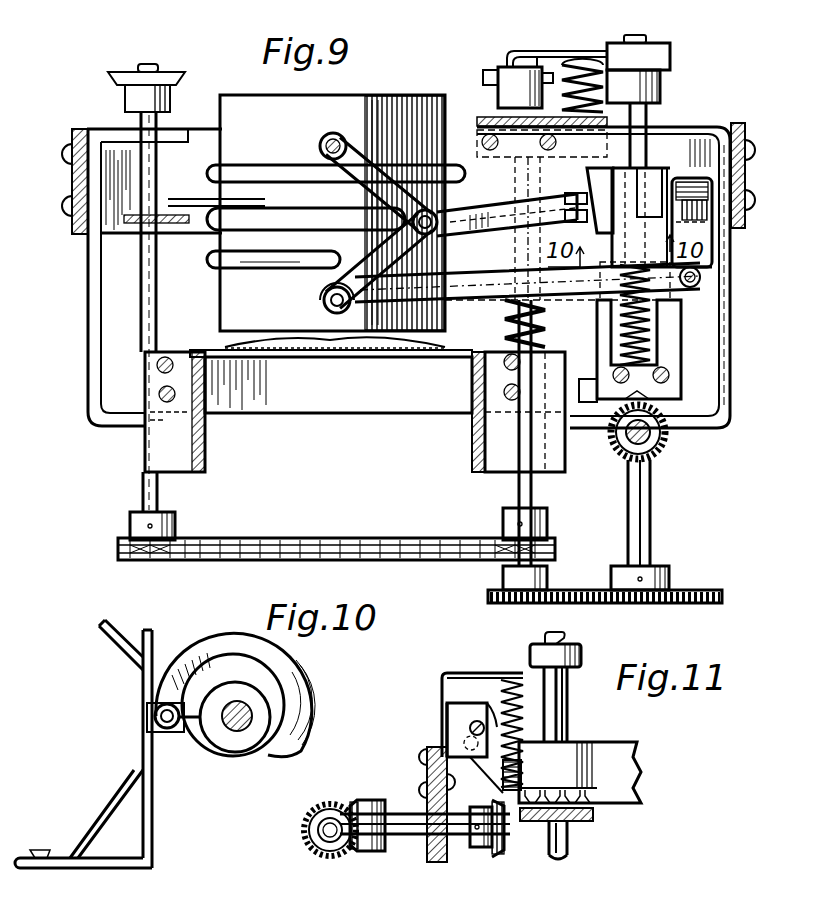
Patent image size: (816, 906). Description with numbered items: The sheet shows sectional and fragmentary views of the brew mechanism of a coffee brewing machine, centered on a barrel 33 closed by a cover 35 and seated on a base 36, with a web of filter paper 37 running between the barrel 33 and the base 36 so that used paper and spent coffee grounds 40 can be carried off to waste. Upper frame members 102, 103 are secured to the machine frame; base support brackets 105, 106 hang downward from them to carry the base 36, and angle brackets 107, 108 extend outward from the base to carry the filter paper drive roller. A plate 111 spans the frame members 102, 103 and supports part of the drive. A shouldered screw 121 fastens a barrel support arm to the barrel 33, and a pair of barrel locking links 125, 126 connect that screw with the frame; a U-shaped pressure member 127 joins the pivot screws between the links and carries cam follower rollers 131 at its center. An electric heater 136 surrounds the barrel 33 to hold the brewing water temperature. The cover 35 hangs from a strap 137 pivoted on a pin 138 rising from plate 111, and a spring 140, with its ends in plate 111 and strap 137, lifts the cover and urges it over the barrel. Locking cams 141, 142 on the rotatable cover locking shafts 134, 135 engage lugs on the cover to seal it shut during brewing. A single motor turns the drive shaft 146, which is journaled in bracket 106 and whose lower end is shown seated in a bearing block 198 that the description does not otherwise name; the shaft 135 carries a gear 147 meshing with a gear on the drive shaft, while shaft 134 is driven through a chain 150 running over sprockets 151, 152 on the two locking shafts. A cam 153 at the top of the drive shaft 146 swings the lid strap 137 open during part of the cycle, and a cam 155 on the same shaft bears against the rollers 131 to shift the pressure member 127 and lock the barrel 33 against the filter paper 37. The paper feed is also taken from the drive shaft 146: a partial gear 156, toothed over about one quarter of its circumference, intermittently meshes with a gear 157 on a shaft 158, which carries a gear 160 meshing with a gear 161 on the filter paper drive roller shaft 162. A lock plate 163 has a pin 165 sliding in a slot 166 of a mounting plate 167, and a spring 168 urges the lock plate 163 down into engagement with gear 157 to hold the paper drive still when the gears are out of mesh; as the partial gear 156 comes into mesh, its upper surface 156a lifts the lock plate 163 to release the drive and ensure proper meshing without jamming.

In FIG. 9, the barrel 33 is at (232, 95).
In FIG. 9, the cover 35 is at (335, 120).
In FIG. 9, the base 36 is at (288, 414).
In FIG. 9, the filter paper 37 is at (415, 352).
In FIG. 9, the spent coffee grounds 40 is at (298, 350).
In FIG. 9, the upper frame member 102 is at (672, 140).
In FIG. 9, the upper frame member 103 is at (746, 130).
In FIG. 9, the base support bracket 105 is at (87, 400).
In FIG. 9, the base support bracket 106 is at (732, 250).
In FIG. 9, the angle bracket 107 is at (210, 470).
In FIG. 9, the angle bracket 108 is at (472, 460).
In FIG. 9, the plate 111 is at (607, 118).
In FIG. 9, the shouldered screw 121 is at (322, 300).
In FIG. 9, the barrel locking link 125 is at (375, 248).
In FIG. 9, the barrel locking link 126 is at (362, 146).
In FIG. 9, the pressure member 127 is at (470, 204).
In FIG. 10, the pressure member 127 is at (48, 850).
In FIG. 9, the cam follower rollers 131 is at (572, 192).
In FIG. 10, the cam follower rollers 131 is at (172, 735).
In FIG. 9, the cover locking shaft 134 is at (142, 492).
In FIG. 9, the cover locking shaft 135 is at (515, 490).
In FIG. 9, the electric heater 136 is at (205, 272).
In FIG. 9, the strap 137 is at (445, 95).
In FIG. 9, the pin 138 is at (578, 42).
In FIG. 9, the spring 140 is at (628, 82).
In FIG. 9, the locking cam 141 is at (173, 70).
In FIG. 9, the locking cam 142 is at (504, 58).
In FIG. 9, the drive shaft 146 is at (651, 534).
In FIG. 10, the drive shaft 146 is at (245, 731).
In FIG. 11, the drive shaft 146 is at (570, 716).
In FIG. 9, the gear 147 is at (490, 600).
In FIG. 9, the chain 150 is at (410, 558).
In FIG. 9, the sprocket 151 is at (178, 528).
In FIG. 9, the sprocket 152 is at (500, 522).
In FIG. 9, the cam 153 is at (672, 52).
In FIG. 9, the cam 155 is at (692, 176).
In FIG. 10, the cam 155 is at (296, 658).
In FIG. 11, the cam 155 is at (580, 650).
In FIG. 11, the partial gear 156 is at (648, 772).
In FIG. 11, the upper surface 156a is at (558, 769).
In FIG. 9, the gear 157 is at (664, 446).
In FIG. 11, the gear 157 is at (505, 852).
In FIG. 9, the shaft 158 is at (650, 430).
In FIG. 11, the shaft 158 is at (400, 838).
In FIG. 11, the gear 160 is at (372, 800).
In FIG. 11, the gear 161 is at (310, 823).
In FIG. 11, the filter paper drive roller shaft 162 is at (322, 840).
In FIG. 9, the lock plate 163 is at (690, 384).
In FIG. 11, the lock plate 163 is at (477, 779).
In FIG. 11, the pin 165 is at (473, 702).
In FIG. 11, the slot 166 is at (468, 733).
In FIG. 11, the mounting plate 167 is at (455, 714).
In FIG. 9, the spring 168 is at (645, 320).
In FIG. 11, the spring 168 is at (512, 682).
In FIG. 9, the bearing block 198 is at (672, 580).